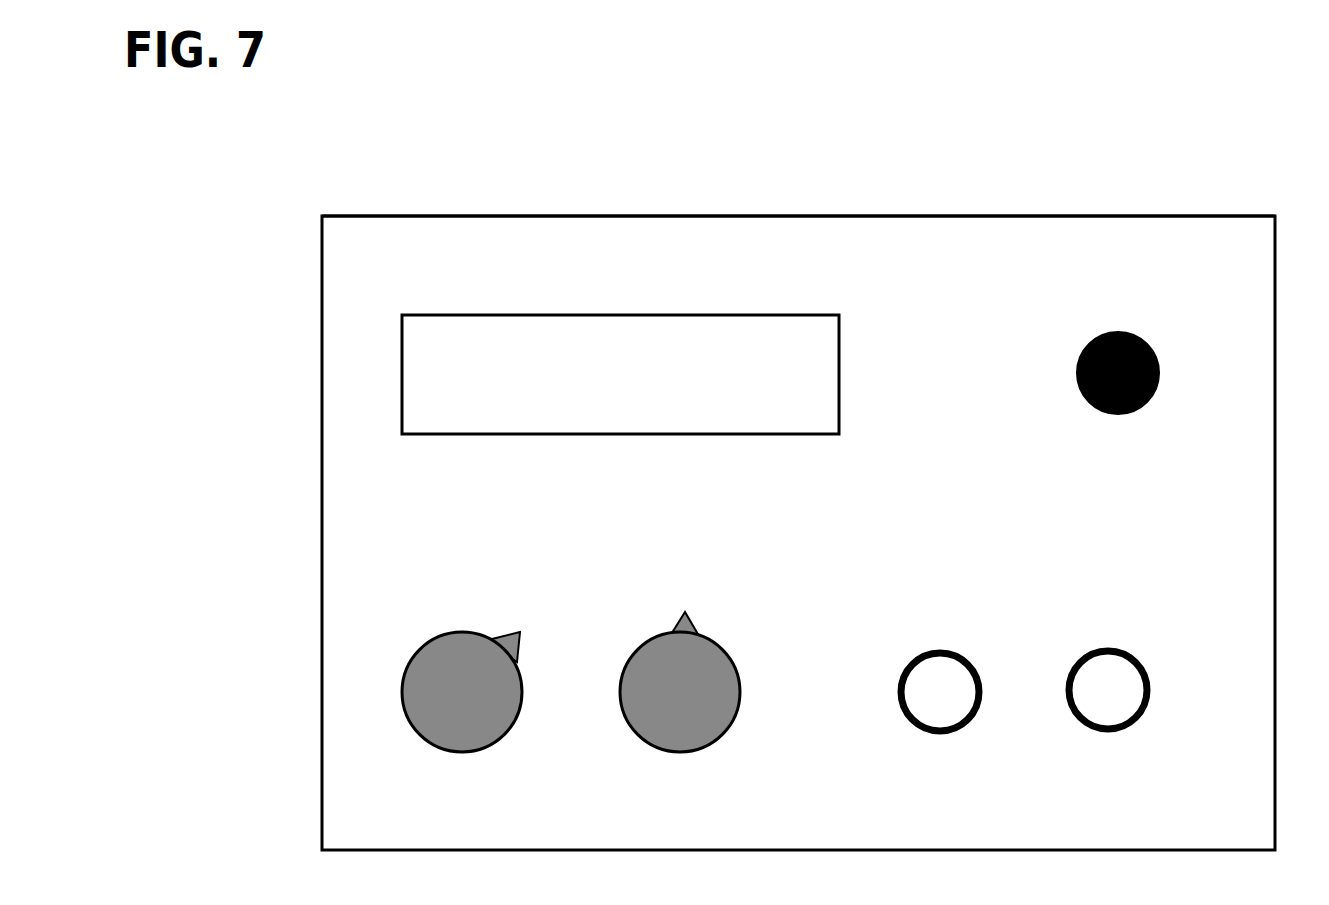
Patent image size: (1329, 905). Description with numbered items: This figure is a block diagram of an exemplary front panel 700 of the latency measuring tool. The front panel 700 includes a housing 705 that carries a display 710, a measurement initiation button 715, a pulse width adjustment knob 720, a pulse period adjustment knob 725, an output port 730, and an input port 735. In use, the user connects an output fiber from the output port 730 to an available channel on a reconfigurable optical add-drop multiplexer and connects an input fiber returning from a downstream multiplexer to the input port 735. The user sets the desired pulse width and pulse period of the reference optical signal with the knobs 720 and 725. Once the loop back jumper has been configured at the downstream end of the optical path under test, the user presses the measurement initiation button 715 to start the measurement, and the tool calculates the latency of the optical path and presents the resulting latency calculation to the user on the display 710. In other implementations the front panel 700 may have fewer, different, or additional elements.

The front panel 700 is at (1193, 228).
The housing 705 is at (367, 228).
The display 710 is at (812, 337).
The measurement initiation button 715 is at (1080, 385).
The pulse width adjustment knob 720 is at (455, 718).
The pulse period adjustment knob 725 is at (717, 668).
The output port 730 is at (953, 675).
The input port 735 is at (1132, 685).